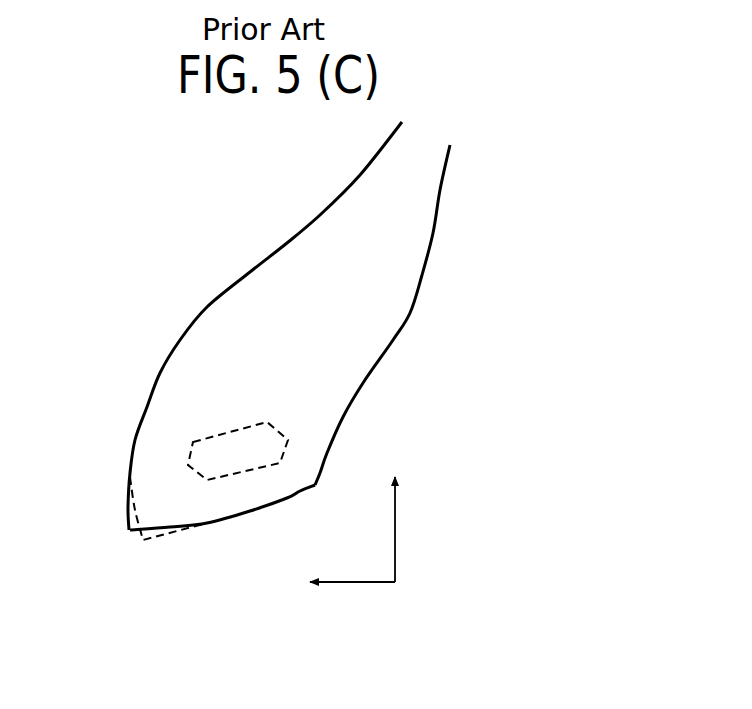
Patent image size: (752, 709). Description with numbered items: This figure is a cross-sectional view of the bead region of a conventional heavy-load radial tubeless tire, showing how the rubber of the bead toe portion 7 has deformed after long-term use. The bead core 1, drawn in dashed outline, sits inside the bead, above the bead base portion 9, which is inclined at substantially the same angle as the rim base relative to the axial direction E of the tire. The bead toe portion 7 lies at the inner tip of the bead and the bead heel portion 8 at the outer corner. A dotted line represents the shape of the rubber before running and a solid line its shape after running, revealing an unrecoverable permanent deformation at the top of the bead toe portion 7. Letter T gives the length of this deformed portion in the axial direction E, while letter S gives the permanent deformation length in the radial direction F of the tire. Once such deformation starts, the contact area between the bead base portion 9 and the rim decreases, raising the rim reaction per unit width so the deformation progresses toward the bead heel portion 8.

The bead core 1 is at (193, 442).
The bead toe portion 7 is at (130, 533).
The bead heel portion 8 is at (315, 485).
The bead base portion 9 is at (245, 515).
The permanent deformation length in the radial direction S is at (140, 543).
The length of the permanently deformed portion in the axial direction T is at (130, 534).
The axial direction of the tire E is at (358, 582).
The radial direction of the tire F is at (395, 530).